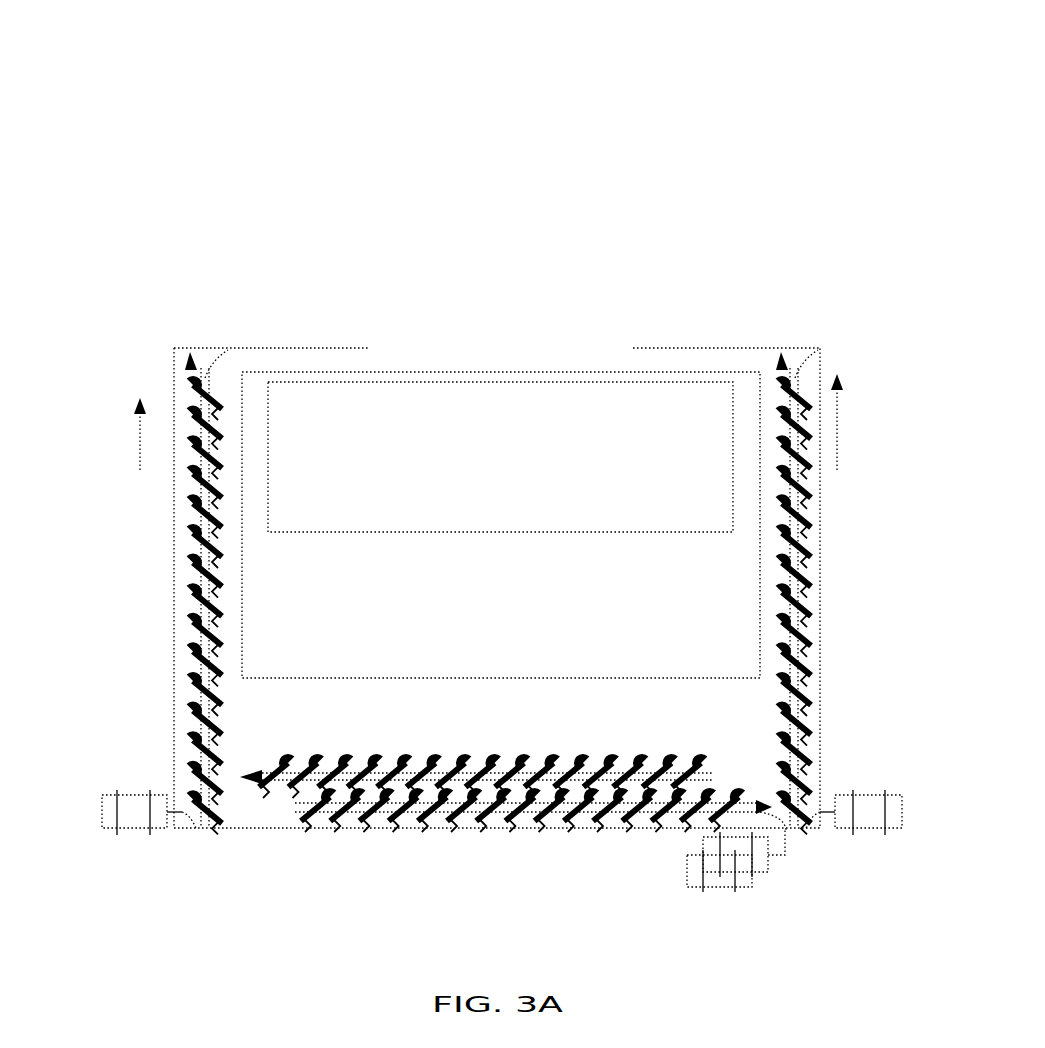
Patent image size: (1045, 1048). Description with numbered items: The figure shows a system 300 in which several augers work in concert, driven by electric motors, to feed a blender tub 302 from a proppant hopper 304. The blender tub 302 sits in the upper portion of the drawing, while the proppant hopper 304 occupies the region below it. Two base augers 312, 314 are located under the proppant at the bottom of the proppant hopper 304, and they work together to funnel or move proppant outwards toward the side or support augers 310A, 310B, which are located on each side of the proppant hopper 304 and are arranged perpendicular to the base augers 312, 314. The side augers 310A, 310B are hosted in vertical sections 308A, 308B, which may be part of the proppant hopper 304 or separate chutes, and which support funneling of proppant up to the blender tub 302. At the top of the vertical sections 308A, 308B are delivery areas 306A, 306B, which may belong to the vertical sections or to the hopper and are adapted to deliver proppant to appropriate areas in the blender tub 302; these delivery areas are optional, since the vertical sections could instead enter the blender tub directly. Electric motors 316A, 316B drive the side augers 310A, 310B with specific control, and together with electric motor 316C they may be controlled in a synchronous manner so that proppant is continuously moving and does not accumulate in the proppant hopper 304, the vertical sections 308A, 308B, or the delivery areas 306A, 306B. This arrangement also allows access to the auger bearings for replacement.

The system 300 is at (764, 96).
The blender tub 302 is at (604, 430).
The proppant hopper 304 is at (618, 693).
The delivery area 306A is at (323, 360).
The delivery area 306B is at (705, 365).
The vertical section 308A is at (177, 632).
The vertical section 308B is at (828, 597).
The side auger 310A is at (192, 742).
The side auger 310B is at (805, 728).
The base auger 312 is at (487, 822).
The base auger 314 is at (258, 790).
The electric motor 316A is at (112, 795).
The electric motor 316B is at (862, 795).
The electric motor 316C is at (757, 910).